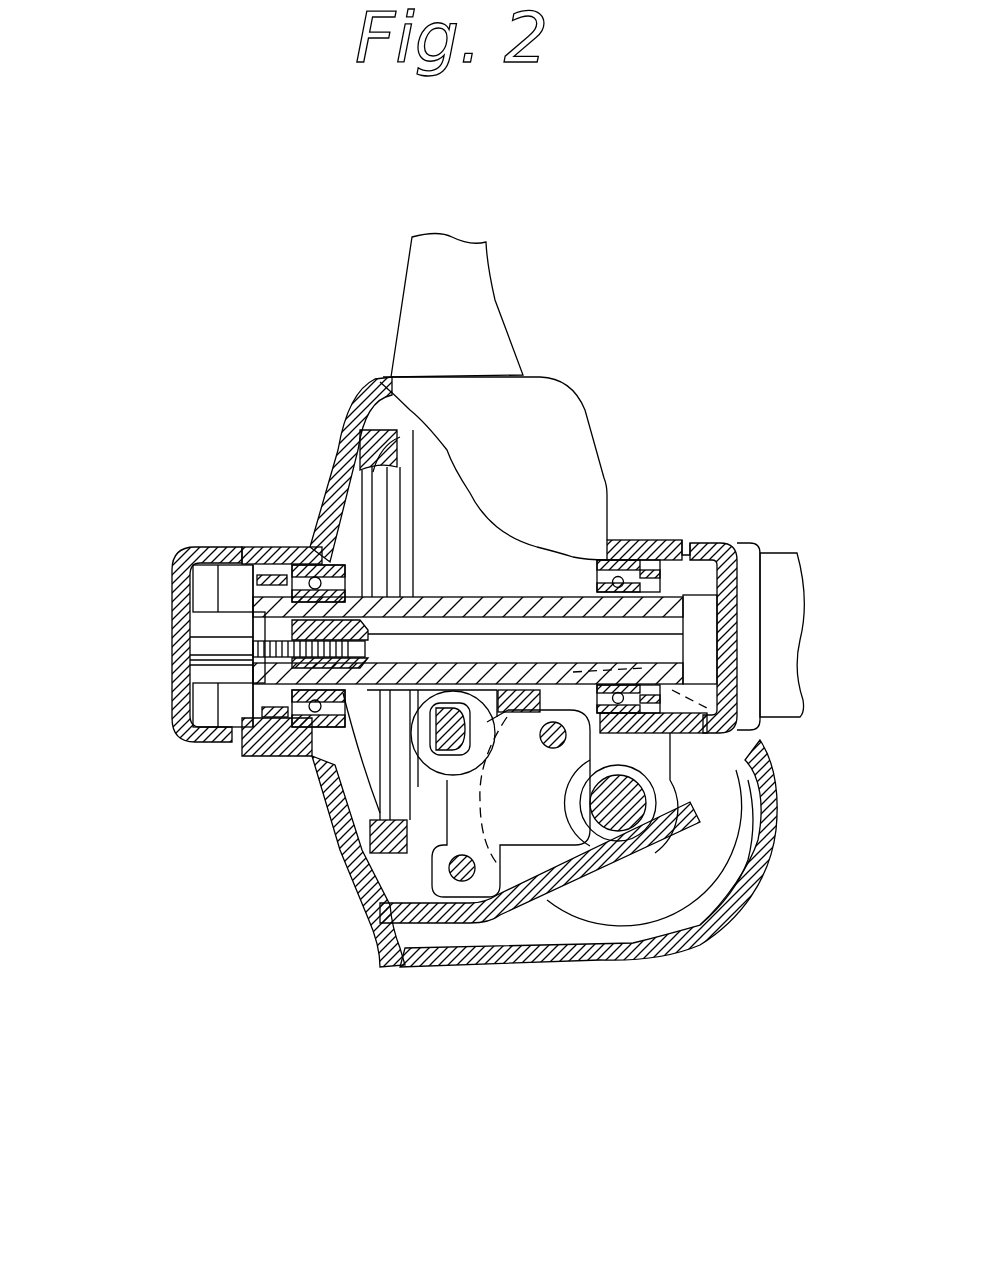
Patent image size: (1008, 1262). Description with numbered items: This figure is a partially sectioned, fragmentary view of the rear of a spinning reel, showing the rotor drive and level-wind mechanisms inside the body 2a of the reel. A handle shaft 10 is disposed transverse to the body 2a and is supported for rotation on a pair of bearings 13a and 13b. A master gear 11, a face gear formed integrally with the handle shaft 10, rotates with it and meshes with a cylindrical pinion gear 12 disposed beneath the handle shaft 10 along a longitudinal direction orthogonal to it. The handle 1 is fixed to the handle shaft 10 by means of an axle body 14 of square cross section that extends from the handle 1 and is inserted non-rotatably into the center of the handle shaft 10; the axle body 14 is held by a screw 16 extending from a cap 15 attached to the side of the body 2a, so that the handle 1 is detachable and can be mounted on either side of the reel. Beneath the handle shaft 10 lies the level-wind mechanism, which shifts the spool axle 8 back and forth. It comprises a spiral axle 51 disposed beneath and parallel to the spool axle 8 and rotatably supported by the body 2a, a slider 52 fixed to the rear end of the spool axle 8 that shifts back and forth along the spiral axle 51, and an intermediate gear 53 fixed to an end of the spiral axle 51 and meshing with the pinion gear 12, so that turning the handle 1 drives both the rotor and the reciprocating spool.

The handle 1 is at (773, 565).
The body 2a is at (320, 487).
The spool axle 8 is at (453, 733).
The handle shaft 10 is at (540, 590).
The master gear 11 is at (352, 418).
The pinion gear 12 is at (443, 695).
The bearing 13a is at (290, 563).
The bearing 13b is at (625, 563).
The axle body 14 is at (472, 632).
The cap 15 is at (175, 692).
The bolt 16 is at (253, 640).
The spiral axle 51 is at (653, 840).
The slider 52 is at (547, 823).
The intermediate gear 53 is at (730, 773).